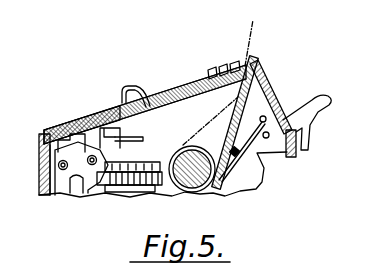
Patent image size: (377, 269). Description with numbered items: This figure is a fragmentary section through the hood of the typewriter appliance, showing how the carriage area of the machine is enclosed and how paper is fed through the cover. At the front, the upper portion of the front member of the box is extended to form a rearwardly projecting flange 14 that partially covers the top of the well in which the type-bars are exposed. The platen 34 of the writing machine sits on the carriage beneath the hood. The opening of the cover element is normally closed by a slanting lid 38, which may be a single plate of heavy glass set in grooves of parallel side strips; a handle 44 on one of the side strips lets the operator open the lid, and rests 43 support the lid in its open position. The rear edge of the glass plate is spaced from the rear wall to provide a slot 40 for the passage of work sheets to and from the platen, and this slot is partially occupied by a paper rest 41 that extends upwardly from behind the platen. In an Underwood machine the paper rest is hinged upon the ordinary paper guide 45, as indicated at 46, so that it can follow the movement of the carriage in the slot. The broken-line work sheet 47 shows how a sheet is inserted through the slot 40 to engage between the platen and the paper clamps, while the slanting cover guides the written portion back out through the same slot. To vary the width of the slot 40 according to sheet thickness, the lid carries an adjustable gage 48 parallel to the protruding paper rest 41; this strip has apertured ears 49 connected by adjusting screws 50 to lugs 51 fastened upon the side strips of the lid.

The rearwardly projecting flange 14 is at (50, 139).
The platen 34 is at (178, 197).
The slanting lid 38 is at (166, 91).
The slot 40 is at (254, 70).
The paper rest 41 is at (268, 103).
The rests 43 is at (313, 100).
The handle 44 is at (122, 90).
The paper guide 45 is at (235, 165).
The hinge of the paper rest 46 is at (238, 155).
The work sheet 47 is at (252, 42).
The adjustable gage 48 is at (243, 66).
The apertured ears 49 is at (234, 63).
The adjusting screws 50 is at (210, 68).
The lugs 51 is at (221, 66).